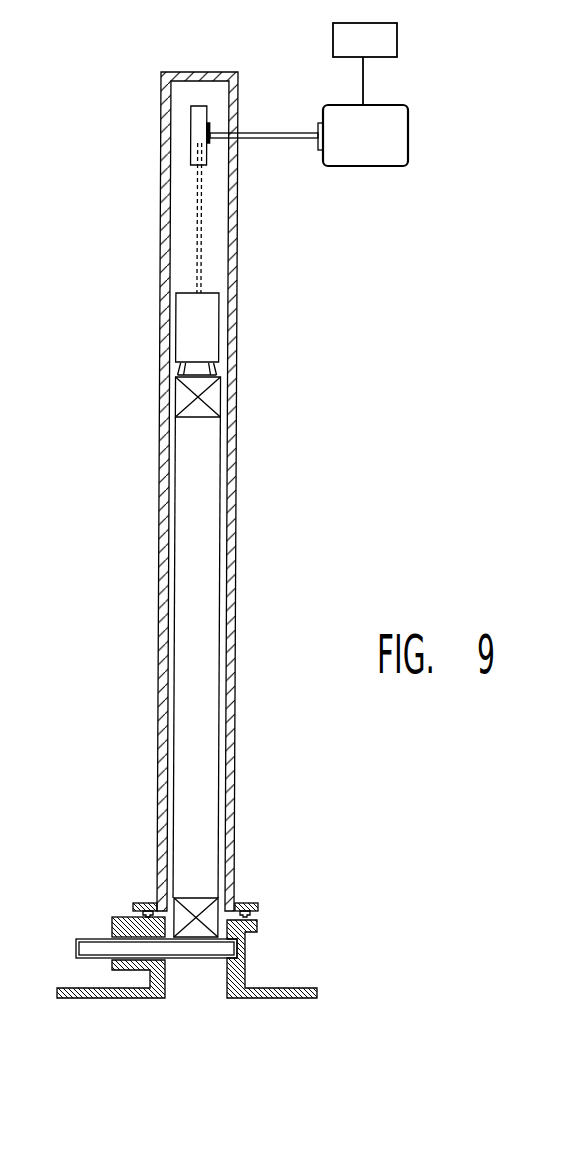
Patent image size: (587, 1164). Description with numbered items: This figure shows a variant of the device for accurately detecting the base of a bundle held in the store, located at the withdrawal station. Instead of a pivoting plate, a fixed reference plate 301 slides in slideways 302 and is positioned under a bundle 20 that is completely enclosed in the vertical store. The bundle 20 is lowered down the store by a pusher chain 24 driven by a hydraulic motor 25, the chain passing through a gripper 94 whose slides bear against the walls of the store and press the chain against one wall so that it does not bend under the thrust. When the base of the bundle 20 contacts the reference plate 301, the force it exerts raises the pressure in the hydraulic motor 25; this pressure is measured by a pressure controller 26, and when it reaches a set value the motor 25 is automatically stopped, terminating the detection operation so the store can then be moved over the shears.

The bundle 20 is at (193, 567).
The pusher chain 24 is at (198, 240).
The hydraulic motor 25 is at (388, 143).
The pressure controller 26 is at (387, 45).
The gripper 94 is at (197, 332).
The reference plate 301 is at (100, 947).
The slideways 302 is at (193, 963).